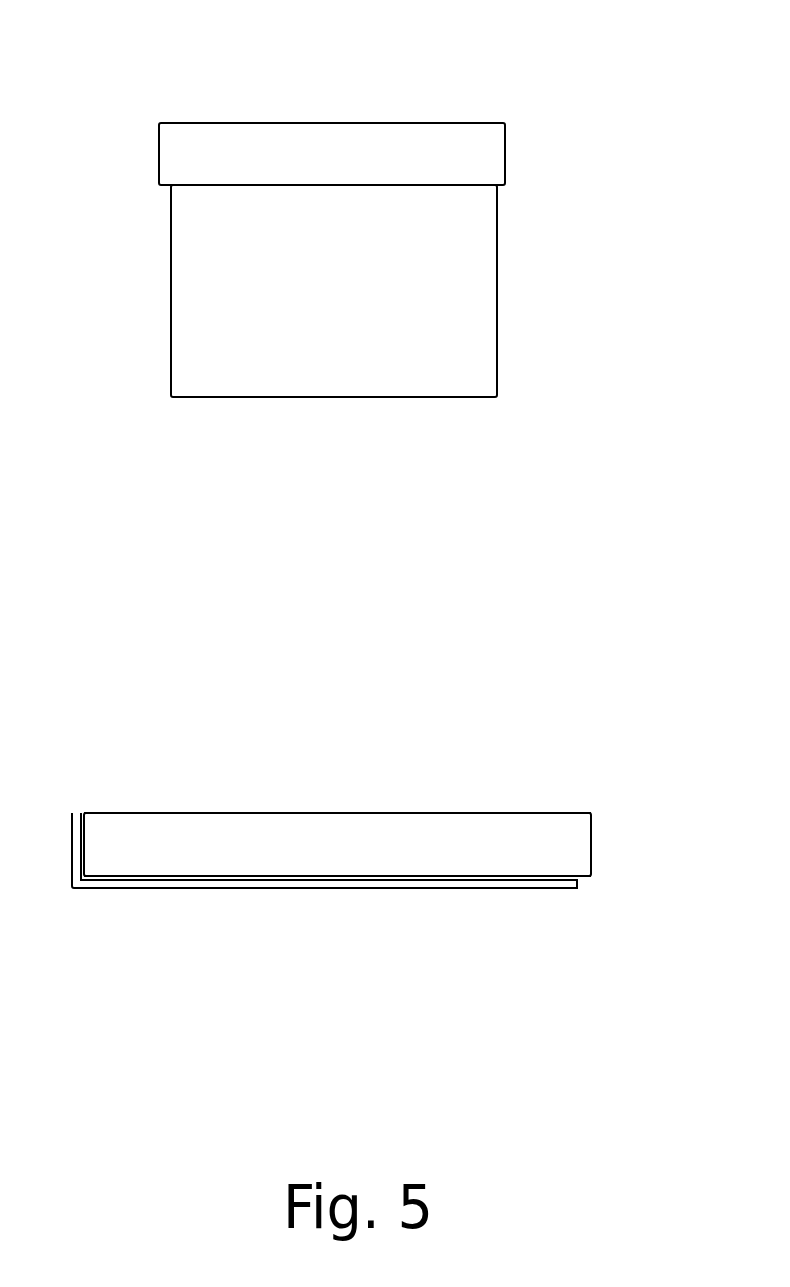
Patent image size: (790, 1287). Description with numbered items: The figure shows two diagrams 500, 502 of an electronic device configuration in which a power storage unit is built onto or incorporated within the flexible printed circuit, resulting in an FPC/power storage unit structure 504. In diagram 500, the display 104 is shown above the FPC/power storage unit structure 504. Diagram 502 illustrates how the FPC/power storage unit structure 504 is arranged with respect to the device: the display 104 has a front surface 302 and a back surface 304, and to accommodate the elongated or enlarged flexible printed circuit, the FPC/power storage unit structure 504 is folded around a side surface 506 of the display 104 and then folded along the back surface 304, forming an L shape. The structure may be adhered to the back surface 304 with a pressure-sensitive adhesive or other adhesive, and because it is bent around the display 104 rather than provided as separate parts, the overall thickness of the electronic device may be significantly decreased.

The diagram 500 is at (604, 38).
The diagram 502 is at (604, 666).
The display 104 is at (337, 499).
The FPC/power storage unit structure 504 is at (160, 939).
The side surface 506 is at (89, 842).
The front surface 302 is at (211, 811).
The back surface 304 is at (471, 871).